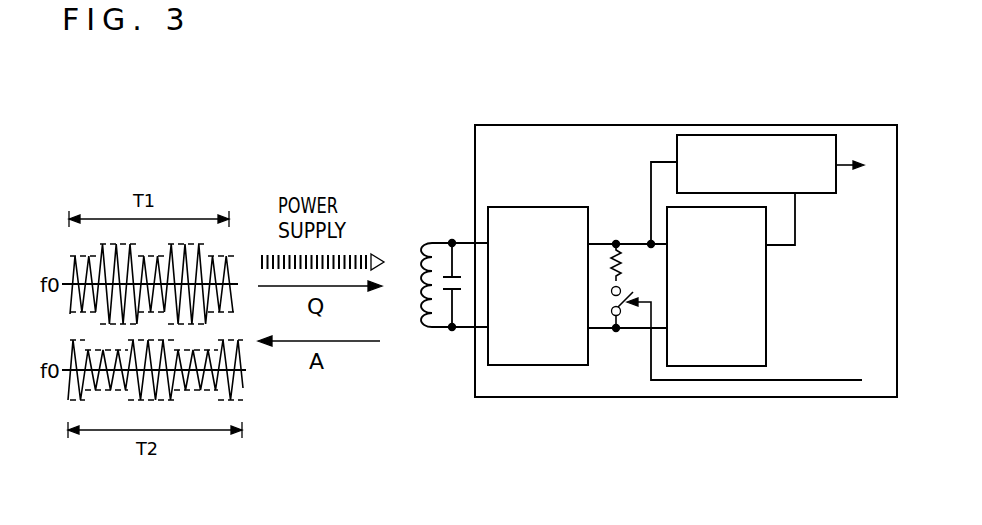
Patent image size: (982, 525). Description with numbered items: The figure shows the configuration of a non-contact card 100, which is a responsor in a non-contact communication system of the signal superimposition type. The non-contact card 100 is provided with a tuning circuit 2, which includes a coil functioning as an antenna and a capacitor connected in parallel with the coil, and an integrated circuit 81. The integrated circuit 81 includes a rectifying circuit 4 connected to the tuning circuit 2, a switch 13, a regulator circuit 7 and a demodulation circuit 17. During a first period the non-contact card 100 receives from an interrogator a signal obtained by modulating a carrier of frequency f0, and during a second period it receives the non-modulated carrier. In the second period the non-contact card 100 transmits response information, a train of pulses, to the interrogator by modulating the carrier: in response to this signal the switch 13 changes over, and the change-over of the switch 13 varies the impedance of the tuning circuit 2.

The tuning circuit 2 is at (433, 252).
The rectifying circuit 4 is at (548, 207).
The regulator circuit 7 is at (767, 294).
The switch 13 is at (605, 302).
The demodulation circuit 17 is at (744, 135).
The integrated circuit 81 is at (560, 398).
The non-contact card 100 is at (640, 111).